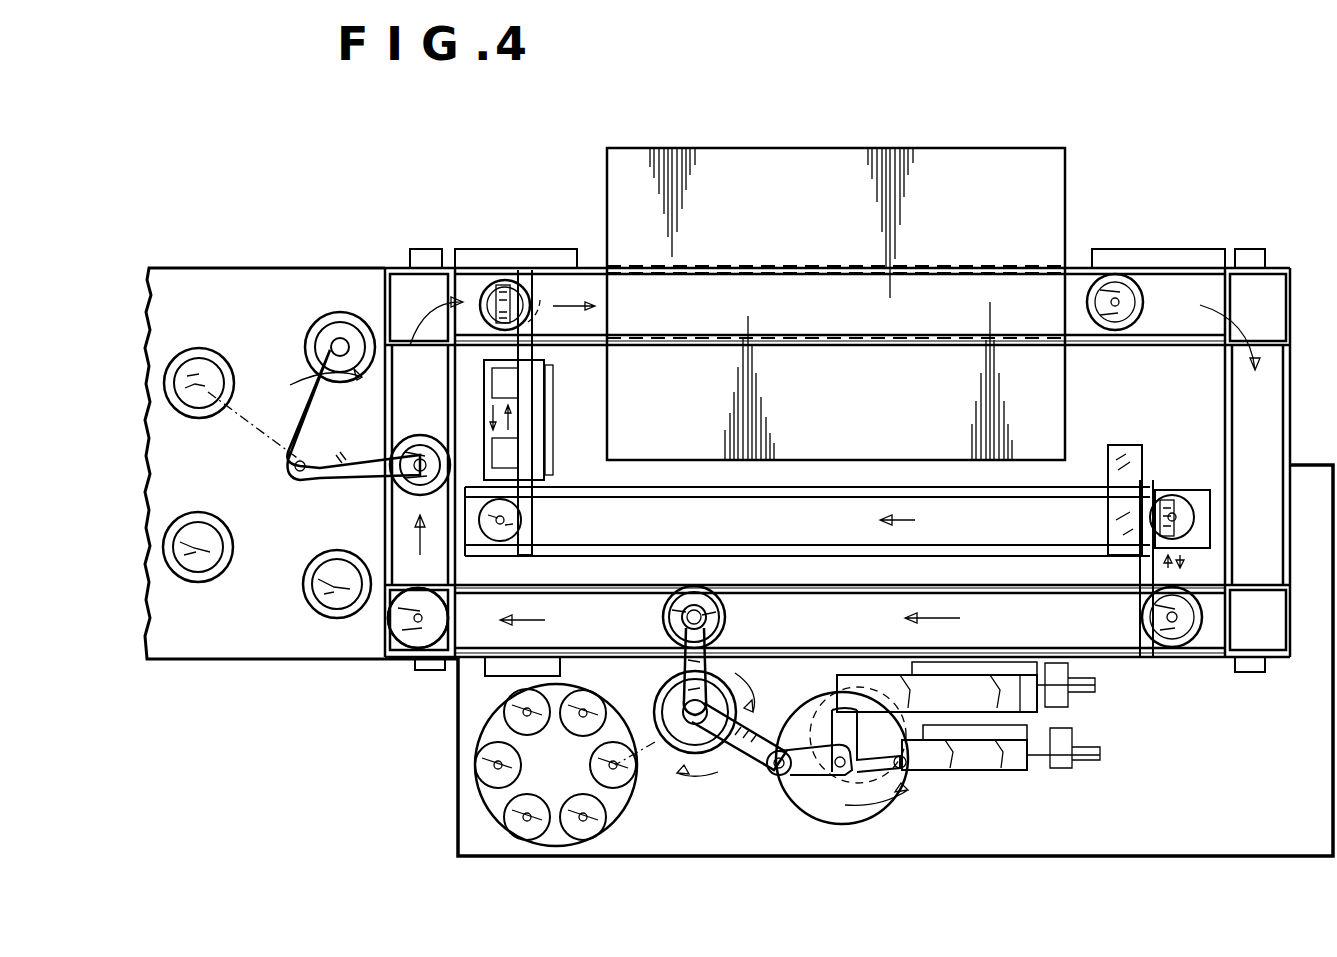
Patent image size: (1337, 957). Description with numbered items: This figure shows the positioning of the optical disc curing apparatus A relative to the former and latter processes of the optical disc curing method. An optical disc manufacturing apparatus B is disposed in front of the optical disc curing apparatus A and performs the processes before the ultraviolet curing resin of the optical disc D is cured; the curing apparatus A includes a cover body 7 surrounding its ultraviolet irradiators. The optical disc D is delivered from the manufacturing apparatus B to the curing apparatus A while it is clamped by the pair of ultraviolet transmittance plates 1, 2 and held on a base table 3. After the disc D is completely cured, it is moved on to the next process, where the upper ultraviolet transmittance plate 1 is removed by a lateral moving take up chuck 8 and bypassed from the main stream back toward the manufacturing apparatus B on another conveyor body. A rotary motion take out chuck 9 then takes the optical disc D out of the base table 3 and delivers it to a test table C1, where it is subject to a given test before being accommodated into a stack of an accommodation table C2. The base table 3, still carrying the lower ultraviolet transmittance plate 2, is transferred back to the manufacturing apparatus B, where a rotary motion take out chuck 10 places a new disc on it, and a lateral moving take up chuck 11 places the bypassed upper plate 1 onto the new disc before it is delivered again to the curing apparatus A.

The upper ultraviolet transmittance plate 1 is at (520, 510).
The lower ultraviolet transmittance plate 2 is at (410, 650).
The base table 3 is at (418, 618).
The cover body 7 is at (682, 148).
The lateral moving take up chuck 8 is at (1195, 520).
The rotary motion take out chuck 9 is at (688, 664).
The rotary motion take out chuck 10 is at (330, 482).
The lateral moving take up chuck 11 is at (482, 292).
The optical disc curing apparatus A is at (836, 266).
The optical disc manufacturing apparatus B is at (262, 295).
The optical disc D is at (408, 445).
The test table C1 is at (888, 800).
The accommodation table C2 is at (498, 800).